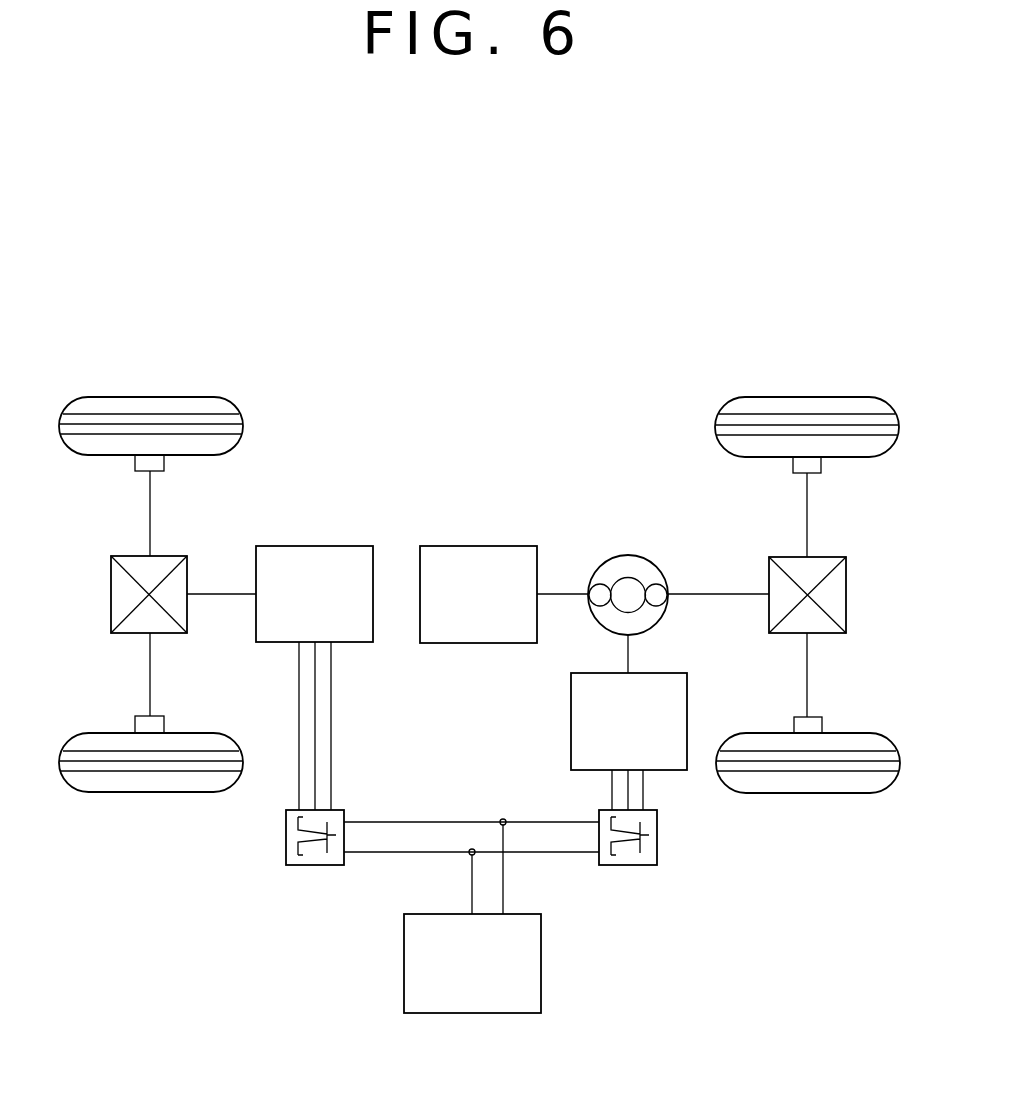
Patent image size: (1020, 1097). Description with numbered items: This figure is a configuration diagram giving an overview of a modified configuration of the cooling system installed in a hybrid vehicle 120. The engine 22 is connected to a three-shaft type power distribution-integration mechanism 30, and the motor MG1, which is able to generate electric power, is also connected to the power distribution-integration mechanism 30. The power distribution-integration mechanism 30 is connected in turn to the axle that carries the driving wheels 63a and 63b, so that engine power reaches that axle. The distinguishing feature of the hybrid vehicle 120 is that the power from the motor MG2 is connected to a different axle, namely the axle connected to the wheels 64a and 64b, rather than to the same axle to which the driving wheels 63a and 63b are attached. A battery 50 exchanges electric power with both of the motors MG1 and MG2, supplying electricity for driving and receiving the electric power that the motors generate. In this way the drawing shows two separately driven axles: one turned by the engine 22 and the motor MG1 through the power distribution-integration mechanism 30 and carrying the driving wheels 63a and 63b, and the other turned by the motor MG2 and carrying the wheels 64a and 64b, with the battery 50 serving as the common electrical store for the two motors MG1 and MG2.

The hybrid vehicle 120 is at (566, 367).
The engine 22 is at (480, 546).
The power distribution-integration mechanism 30 is at (628, 555).
The battery 50 is at (541, 962).
The driving wheel 63a is at (807, 397).
The driving wheel 63b is at (808, 793).
The wheel 64a is at (150, 397).
The wheel 64b is at (150, 793).
The motor MG1 is at (571, 720).
The motor MG2 is at (315, 546).